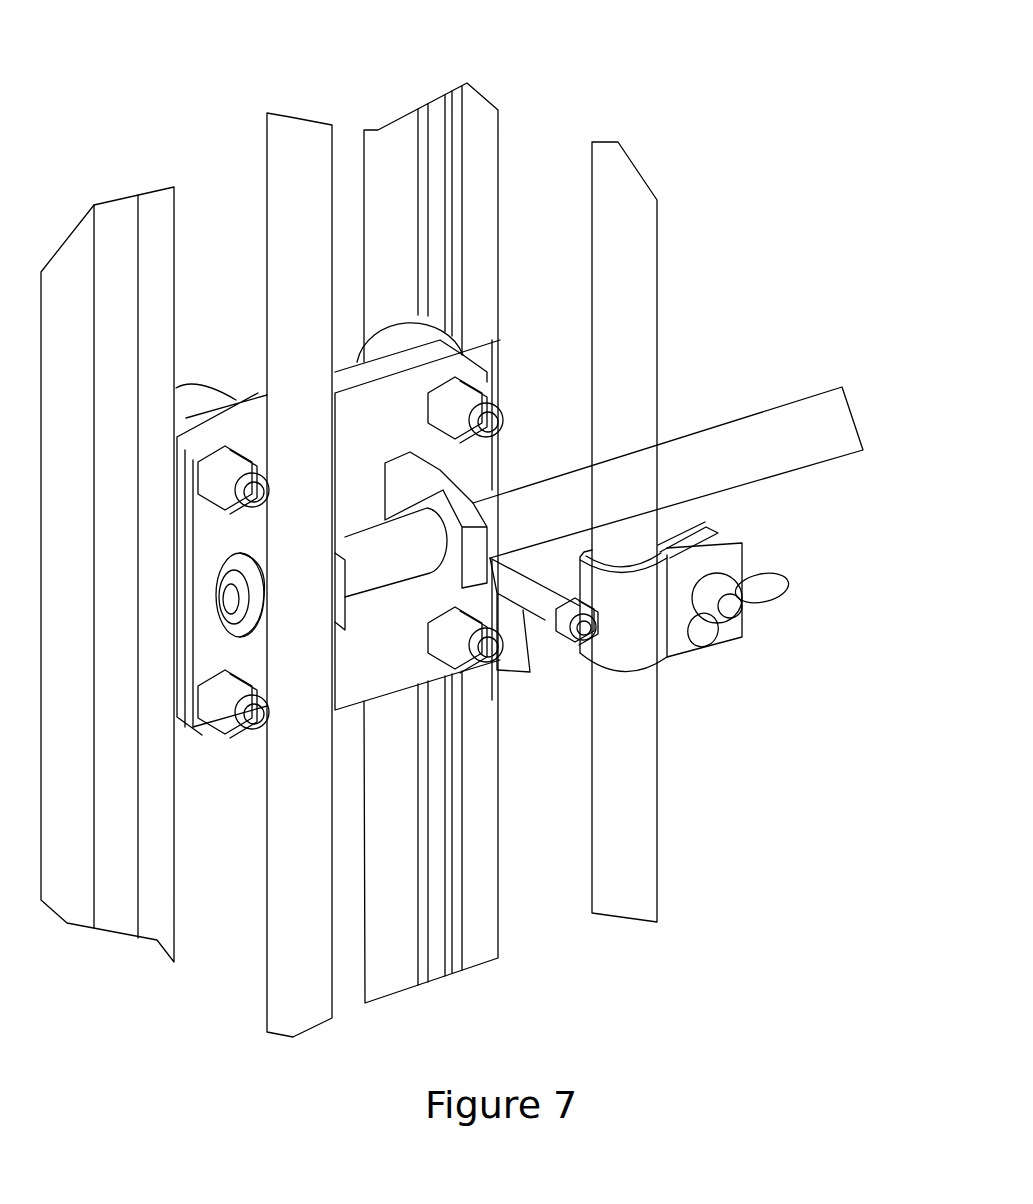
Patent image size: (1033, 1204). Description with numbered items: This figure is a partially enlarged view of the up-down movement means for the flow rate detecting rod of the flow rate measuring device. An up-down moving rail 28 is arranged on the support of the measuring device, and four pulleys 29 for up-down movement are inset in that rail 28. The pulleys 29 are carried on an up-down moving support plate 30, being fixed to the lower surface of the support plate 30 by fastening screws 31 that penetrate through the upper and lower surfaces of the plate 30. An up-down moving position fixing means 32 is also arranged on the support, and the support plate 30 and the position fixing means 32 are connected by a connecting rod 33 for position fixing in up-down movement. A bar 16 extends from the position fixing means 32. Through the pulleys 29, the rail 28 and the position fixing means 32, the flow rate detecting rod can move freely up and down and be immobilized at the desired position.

The horizontal bar 16 is at (757, 410).
The up-down moving rail 28 is at (445, 175).
The pulleys for up-down movement 29 is at (448, 328).
The up-down moving support plate 30 is at (253, 397).
The fastening screws for the up-down moving support plate 31 is at (503, 397).
The up-down moving position fixing means 32 is at (668, 653).
The connecting rod for position fixing in up-down movement 33 is at (523, 607).